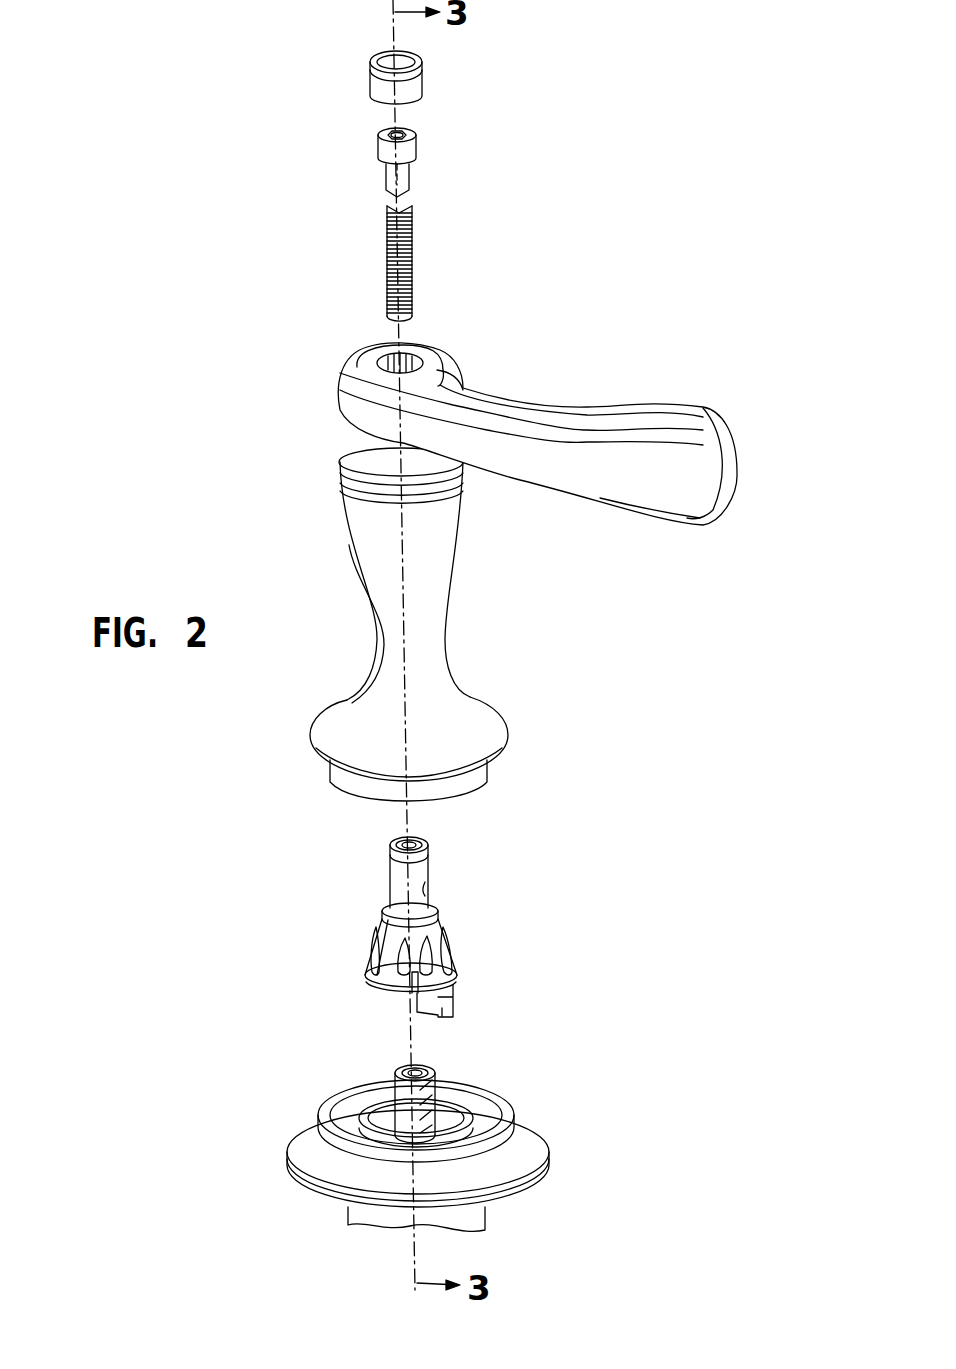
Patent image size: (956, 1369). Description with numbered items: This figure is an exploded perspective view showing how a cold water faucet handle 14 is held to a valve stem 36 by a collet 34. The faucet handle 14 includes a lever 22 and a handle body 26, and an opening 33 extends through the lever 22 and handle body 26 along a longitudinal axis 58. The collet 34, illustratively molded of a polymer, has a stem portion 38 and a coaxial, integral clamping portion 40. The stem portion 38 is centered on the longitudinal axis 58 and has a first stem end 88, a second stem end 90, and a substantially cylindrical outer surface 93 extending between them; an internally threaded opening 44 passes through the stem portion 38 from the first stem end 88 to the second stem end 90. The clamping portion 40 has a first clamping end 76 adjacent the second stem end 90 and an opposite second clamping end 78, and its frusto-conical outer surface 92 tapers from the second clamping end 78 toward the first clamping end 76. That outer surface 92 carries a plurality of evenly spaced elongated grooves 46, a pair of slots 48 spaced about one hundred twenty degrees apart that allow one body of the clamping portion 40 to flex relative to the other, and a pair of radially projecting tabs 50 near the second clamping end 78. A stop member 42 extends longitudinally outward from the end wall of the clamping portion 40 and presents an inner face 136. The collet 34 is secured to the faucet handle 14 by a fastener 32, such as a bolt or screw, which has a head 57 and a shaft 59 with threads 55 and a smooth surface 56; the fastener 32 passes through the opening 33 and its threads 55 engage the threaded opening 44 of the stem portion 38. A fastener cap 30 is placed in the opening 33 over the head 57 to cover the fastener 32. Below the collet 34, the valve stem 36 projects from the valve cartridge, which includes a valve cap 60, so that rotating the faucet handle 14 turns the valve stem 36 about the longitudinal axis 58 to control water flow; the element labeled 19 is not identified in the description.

The cold water faucet handle 14 is at (470, 548).
The valve body escutcheon 19 is at (433, 1137).
The lever 22 is at (498, 410).
The handle body 26 is at (433, 583).
The fastener cap 30 is at (413, 84).
The fastener 32 is at (394, 188).
The opening 33 is at (378, 356).
The collet 34 is at (406, 928).
The valve stem 36 is at (405, 1097).
The stem portion 38 is at (434, 847).
The clamping portion 40 is at (432, 976).
The stop member 42 is at (455, 1005).
The threaded opening 44 is at (395, 845).
The grooves 46 is at (378, 957).
The slots 48 is at (383, 990).
The tabs 50 is at (412, 1000).
The threads 55 is at (413, 297).
The smooth surface 56 is at (385, 187).
The head 57 is at (380, 154).
The longitudinal axis 58 is at (395, 115).
The shaft 59 is at (413, 210).
The valve cap 60 is at (333, 1127).
The first clamping end 76 is at (445, 908).
The second clamping end 78 is at (455, 970).
The first stem end 88 is at (425, 843).
The second stem end 90 is at (390, 900).
The outer surface 92 is at (380, 925).
The outer surface 93 is at (427, 882).
The inner face 136 is at (440, 1022).